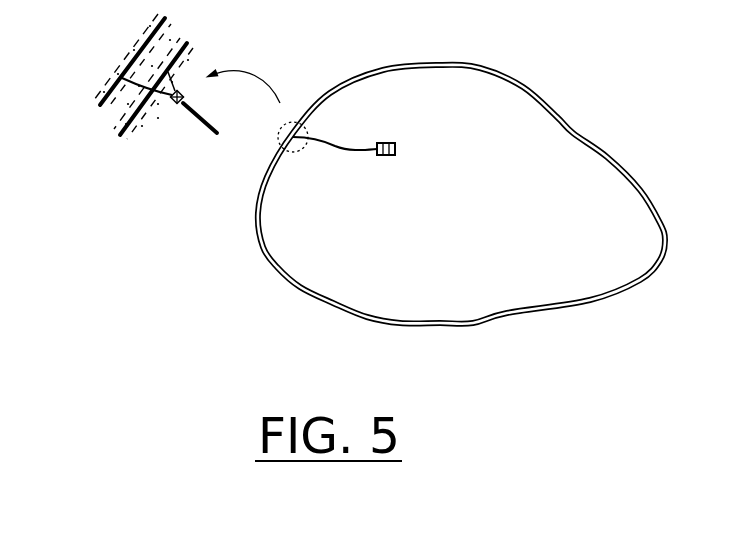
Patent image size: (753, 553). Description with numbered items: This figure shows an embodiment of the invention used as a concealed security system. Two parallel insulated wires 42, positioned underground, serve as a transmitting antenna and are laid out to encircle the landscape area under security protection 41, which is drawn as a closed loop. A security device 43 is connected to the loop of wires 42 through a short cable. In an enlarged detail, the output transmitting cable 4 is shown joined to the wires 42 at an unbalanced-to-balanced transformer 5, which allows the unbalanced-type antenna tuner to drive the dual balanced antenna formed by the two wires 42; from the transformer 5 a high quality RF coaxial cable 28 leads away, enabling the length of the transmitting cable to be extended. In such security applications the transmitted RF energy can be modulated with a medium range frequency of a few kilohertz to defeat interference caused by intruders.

The landscape area under security protection 41 is at (461, 194).
The security device 43 is at (383, 143).
The parallel insulated wires 42 is at (99, 106).
The output transmitting cable 4 is at (163, 100).
The coaxial cable 28 is at (187, 109).
The unbalanced-to-balanced transformer 5 is at (181, 88).